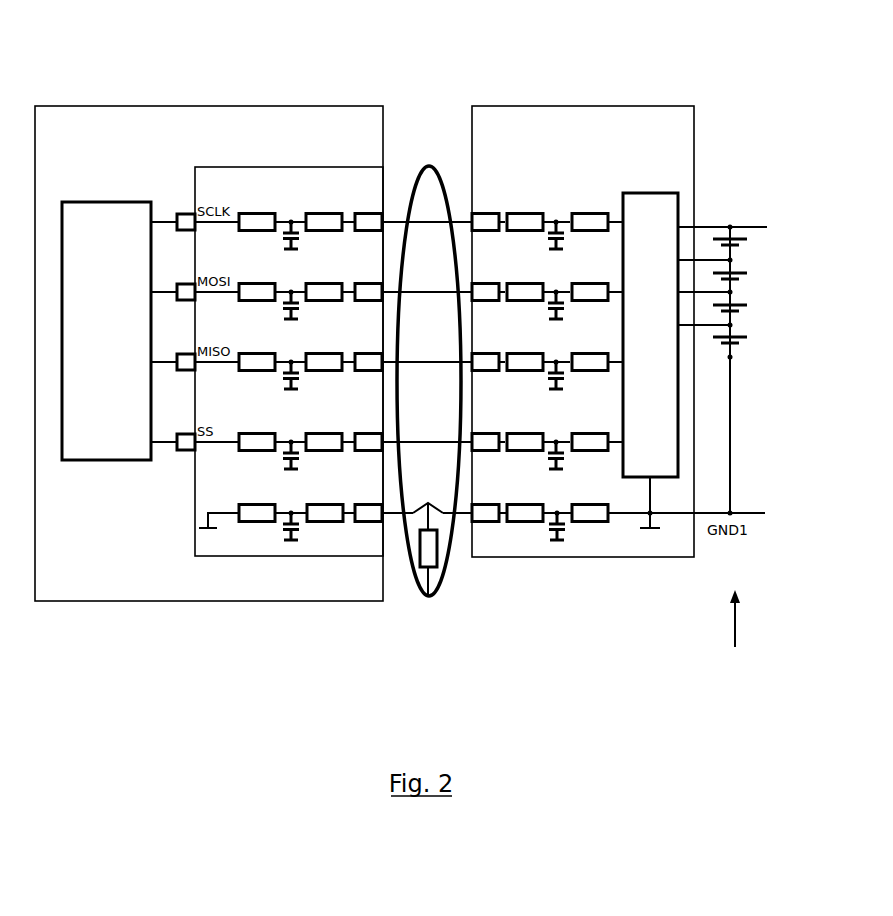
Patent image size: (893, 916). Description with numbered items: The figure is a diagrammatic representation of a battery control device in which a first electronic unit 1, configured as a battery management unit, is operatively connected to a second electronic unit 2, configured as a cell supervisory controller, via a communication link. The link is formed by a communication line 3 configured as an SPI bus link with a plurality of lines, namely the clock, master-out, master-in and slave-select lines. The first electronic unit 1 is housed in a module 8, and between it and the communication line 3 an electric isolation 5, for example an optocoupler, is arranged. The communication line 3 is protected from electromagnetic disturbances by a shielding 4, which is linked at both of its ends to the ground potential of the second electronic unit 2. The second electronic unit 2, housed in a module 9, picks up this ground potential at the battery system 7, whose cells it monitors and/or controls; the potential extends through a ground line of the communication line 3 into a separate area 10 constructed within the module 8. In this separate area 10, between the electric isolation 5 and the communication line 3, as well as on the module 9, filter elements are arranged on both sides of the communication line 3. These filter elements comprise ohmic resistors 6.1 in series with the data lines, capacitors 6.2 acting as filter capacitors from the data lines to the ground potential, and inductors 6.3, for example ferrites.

The first electronic unit 1 is at (106, 331).
The second electronic unit 2 is at (650, 335).
The communication line 3 is at (398, 215).
The shielding 4 is at (415, 580).
The electric isolation 5 is at (187, 449).
The resistor 6.1 is at (248, 512).
The capacitance 6.2 is at (285, 527).
The inductor 6.3 is at (373, 513).
The battery system 7 is at (735, 635).
The module 8 is at (168, 172).
The module 9 is at (577, 175).
The separate area 10 is at (313, 188).